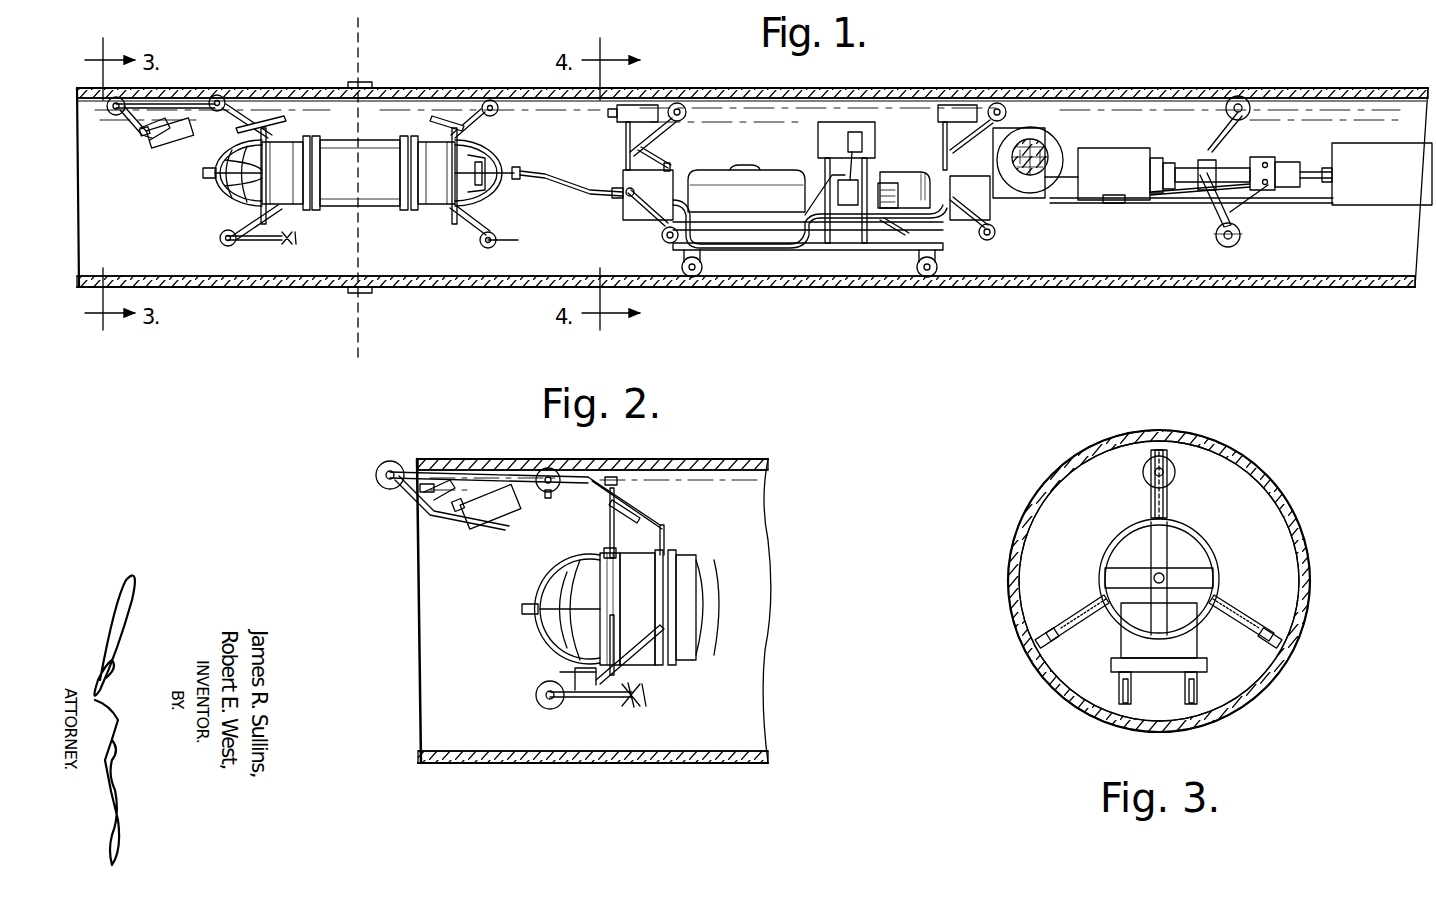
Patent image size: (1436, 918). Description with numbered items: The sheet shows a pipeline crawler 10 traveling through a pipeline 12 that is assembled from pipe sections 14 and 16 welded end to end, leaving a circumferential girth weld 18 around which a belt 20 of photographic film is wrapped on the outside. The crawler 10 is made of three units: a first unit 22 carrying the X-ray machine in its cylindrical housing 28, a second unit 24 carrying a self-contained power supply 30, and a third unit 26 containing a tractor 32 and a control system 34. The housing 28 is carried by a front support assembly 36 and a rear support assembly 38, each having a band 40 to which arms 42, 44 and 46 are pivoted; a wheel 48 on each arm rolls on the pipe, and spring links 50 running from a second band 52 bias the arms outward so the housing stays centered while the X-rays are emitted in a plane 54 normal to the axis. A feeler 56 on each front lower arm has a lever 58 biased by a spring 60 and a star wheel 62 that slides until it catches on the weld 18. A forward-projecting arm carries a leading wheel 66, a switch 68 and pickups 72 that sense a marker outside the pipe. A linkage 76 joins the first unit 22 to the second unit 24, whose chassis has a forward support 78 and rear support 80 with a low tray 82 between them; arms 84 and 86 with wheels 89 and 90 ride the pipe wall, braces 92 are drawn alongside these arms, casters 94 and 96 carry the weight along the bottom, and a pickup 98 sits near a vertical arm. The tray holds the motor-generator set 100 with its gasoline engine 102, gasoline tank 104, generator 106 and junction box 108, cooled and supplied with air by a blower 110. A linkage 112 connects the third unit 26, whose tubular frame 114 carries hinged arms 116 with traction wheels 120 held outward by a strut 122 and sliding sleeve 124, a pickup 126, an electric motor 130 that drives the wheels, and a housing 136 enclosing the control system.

In FIG. 1, the crawler 10 is at (930, 73).
In FIG. 1, the pipeline 12 is at (1118, 95).
In FIG. 2, the pipeline 12 is at (594, 611).
In FIG. 3, the pipeline 12 is at (1286, 518).
In FIG. 1, the section of pipe 14 is at (222, 288).
In FIG. 1, the section of pipe 16 is at (413, 288).
In FIG. 1, the girth weld 18 is at (360, 222).
In FIG. 1, the belt 20 is at (372, 84).
In FIG. 1, the first unit 22 is at (316, 185).
In FIG. 1, the second unit 24 is at (838, 181).
In FIG. 1, the third unit 26 is at (1212, 159).
In FIG. 1, the X-ray machine housing 28 is at (388, 206).
In FIG. 2, the X-ray machine housing 28 is at (713, 562).
In FIG. 1, the power supply 30 is at (815, 162).
In FIG. 1, the tractor 32 is at (1192, 138).
In FIG. 1, the control system 34 is at (1388, 213).
In FIG. 1, the front support assembly 36 is at (262, 185).
In FIG. 1, the rear support assembly 38 is at (468, 152).
In FIG. 2, the band or clamp 40 is at (662, 564).
In FIG. 3, the band or clamp 40 is at (1211, 560).
In FIG. 1, the arm 42 is at (250, 100).
In FIG. 2, the arm 42 is at (607, 495).
In FIG. 3, the arm 42 is at (1172, 502).
In FIG. 1, the arm 44 is at (460, 250).
In FIG. 2, the arm 44 is at (640, 663).
In FIG. 3, the arm 44 is at (1241, 628).
In FIG. 3, the arm 46 is at (1090, 620).
In FIG. 1, the wheel 48 is at (217, 95).
In FIG. 2, the wheel 48 is at (552, 492).
In FIG. 3, the wheel 48 is at (1048, 649).
In FIG. 2, the spring link 50 is at (612, 500).
In FIG. 2, the second band or clamp 52 is at (620, 562).
In FIG. 1, the plane 54 is at (362, 44).
In FIG. 1, the feeler 56 is at (268, 245).
In FIG. 2, the feeler 56 is at (607, 706).
In FIG. 2, the lever 58 is at (575, 672).
In FIG. 2, the spring 60 is at (630, 645).
In FIG. 1, the star wheel 62 is at (289, 238).
In FIG. 2, the star wheel 62 is at (640, 700).
In FIG. 1, the wheel 66 is at (112, 114).
In FIG. 2, the wheel 66 is at (380, 482).
In FIG. 3, the wheel 66 is at (1168, 441).
In FIG. 1, the switch 68 is at (142, 134).
In FIG. 2, the switch 68 is at (412, 492).
In FIG. 2, the pickup 72 is at (490, 520).
In FIG. 1, the linkage / chassis 76 is at (535, 190).
In FIG. 1, the forward support 78 is at (663, 195).
In FIG. 1, the rear support 80 is at (992, 213).
In FIG. 1, the tray 82 is at (940, 246).
In FIG. 3, the tray 82 is at (1206, 668).
In FIG. 1, the arm 84 is at (670, 130).
In FIG. 1, the arm 86 is at (662, 224).
In FIG. 1, the wheel 89 is at (683, 104).
In FIG. 1, the wheel 90 is at (667, 244).
In FIG. 1, the brace 92 is at (670, 158).
In FIG. 1, the caster 94 is at (697, 277).
In FIG. 3, the caster 94 is at (1128, 704).
In FIG. 1, the caster 96 is at (928, 278).
In FIG. 1, the pickup or sensor 98 is at (650, 103).
In FIG. 1, the motor-generator set 100 is at (890, 166).
In FIG. 1, the gasoline engine 102 is at (906, 172).
In FIG. 1, the gasoline tank 104 is at (774, 201).
In FIG. 1, the electrical generator 106 is at (835, 180).
In FIG. 1, the junction box 108 is at (835, 128).
In FIG. 1, the blower 110 is at (1040, 135).
In FIG. 1, the linkage 112 is at (1080, 168).
In FIG. 1, the frame 114 is at (1315, 165).
In FIG. 1, the arm 116 is at (1215, 200).
In FIG. 1, the traction wheel 120 is at (1250, 102).
In FIG. 1, the strut 122 is at (1236, 140).
In FIG. 1, the sleeve 124 is at (1288, 172).
In FIG. 1, the pickup or sensor 126 is at (985, 108).
In FIG. 1, the electric motor 130 is at (1131, 180).
In FIG. 1, the housing 136 is at (1390, 143).